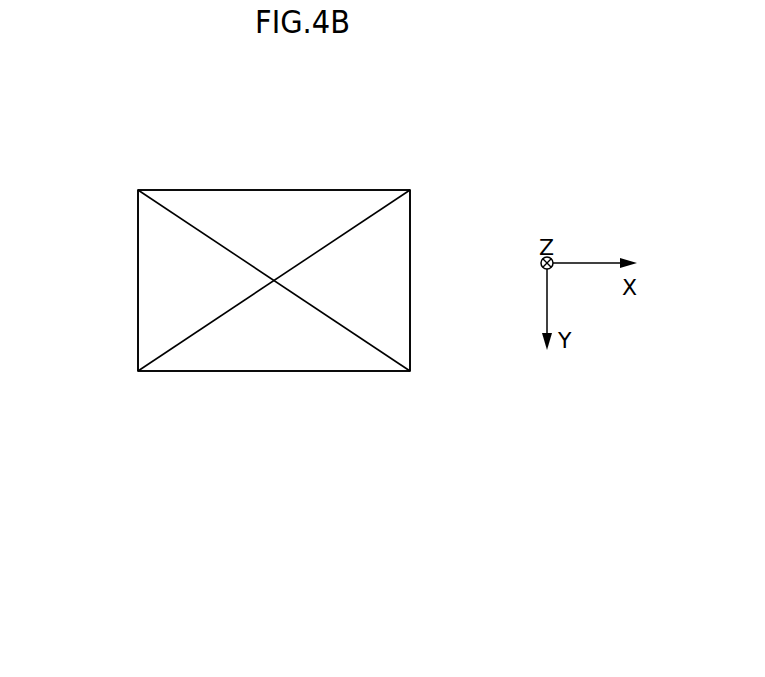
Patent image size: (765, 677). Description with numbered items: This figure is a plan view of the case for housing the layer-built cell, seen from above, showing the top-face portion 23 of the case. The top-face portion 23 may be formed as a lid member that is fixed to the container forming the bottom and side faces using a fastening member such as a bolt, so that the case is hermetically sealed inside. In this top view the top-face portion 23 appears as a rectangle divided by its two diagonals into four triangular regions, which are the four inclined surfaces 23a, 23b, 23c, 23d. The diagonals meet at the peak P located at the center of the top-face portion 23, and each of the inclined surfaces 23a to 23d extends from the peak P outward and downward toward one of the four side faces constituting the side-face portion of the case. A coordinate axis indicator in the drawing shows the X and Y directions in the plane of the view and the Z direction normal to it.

The top-face portion 23 is at (406, 181).
The inclined surface 23a is at (392, 289).
The inclined surface 23b is at (282, 217).
The inclined surface 23c is at (170, 283).
The inclined surface 23d is at (302, 347).
The peak P is at (275, 281).